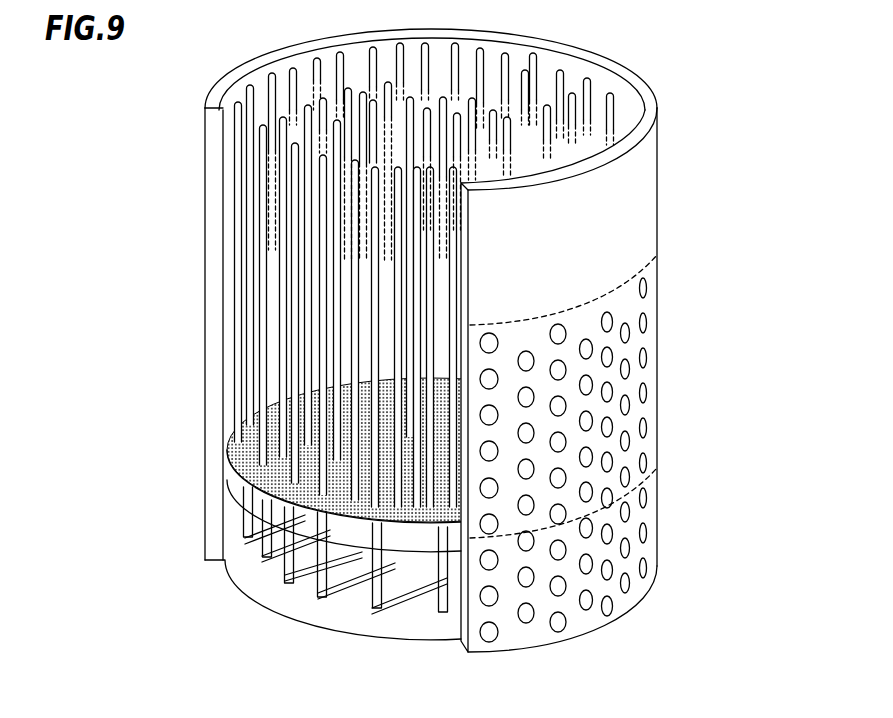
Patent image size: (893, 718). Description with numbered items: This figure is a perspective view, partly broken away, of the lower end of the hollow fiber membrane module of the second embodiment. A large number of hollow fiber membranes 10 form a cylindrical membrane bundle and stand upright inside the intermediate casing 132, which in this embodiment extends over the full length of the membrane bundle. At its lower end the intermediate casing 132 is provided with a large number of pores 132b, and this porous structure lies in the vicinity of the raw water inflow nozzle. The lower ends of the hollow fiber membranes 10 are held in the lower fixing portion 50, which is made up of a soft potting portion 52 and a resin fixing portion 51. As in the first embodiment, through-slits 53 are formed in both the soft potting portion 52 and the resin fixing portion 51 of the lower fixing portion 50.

The hollow fiber membranes 10 is at (250, 280).
The lower fixing portion 50 is at (351, 548).
The resin fixing portion 51 is at (242, 553).
The soft potting portion 52 is at (237, 486).
The through-slits 53 is at (342, 486).
The intermediate casing 132 is at (642, 193).
The pores 132b is at (625, 400).